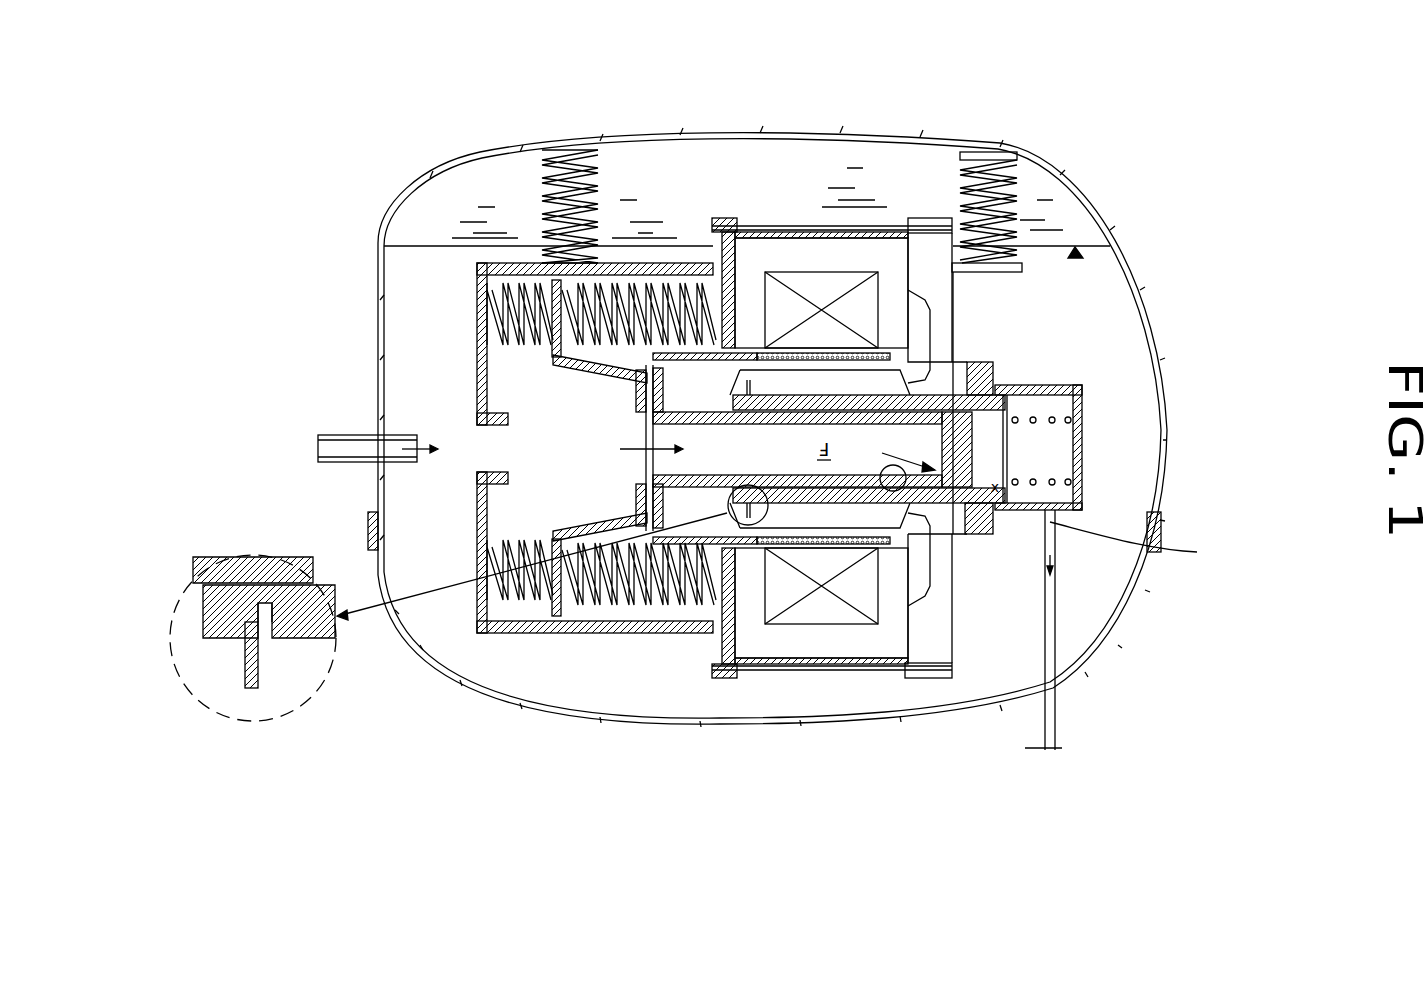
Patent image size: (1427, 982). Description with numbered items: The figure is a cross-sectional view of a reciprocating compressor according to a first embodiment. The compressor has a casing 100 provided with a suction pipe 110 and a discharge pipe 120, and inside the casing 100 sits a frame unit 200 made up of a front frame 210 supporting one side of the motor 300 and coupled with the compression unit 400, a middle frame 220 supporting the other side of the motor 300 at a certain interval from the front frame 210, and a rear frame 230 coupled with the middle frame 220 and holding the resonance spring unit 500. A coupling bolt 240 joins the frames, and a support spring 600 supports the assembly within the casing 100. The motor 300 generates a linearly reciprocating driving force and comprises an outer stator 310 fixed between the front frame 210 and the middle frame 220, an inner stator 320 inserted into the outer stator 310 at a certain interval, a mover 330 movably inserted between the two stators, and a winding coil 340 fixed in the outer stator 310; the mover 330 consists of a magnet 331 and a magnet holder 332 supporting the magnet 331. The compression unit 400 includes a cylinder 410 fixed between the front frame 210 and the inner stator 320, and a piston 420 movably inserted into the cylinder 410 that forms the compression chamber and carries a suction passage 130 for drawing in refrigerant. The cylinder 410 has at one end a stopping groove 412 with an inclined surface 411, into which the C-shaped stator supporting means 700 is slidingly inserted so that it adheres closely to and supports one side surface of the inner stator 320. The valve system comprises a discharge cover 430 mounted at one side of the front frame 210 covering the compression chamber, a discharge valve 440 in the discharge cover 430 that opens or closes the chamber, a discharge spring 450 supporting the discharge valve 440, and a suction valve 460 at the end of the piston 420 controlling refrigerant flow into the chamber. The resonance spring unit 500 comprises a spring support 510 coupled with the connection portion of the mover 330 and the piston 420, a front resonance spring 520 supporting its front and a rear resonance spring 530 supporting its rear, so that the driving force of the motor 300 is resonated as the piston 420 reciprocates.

The casing 100 is at (935, 716).
The suction pipe 110 is at (340, 457).
The discharge pipe 120 is at (1058, 727).
The suction passage 130 is at (895, 490).
The frame unit 200 is at (628, 86).
The front frame 210 is at (915, 212).
The middle frame 220 is at (728, 210).
The rear frame 230 is at (645, 250).
The coupling bolt 240 is at (935, 217).
The motor 300 is at (712, 766).
The outer stator 310 is at (890, 600).
The inner stator 320 is at (850, 505).
The mover 330 is at (750, 548).
The magnet 331 is at (660, 530).
The magnet holder 332 is at (641, 530).
The winding coil 340 is at (800, 590).
The compression unit 400 is at (1253, 347).
The cylinder 410 is at (1005, 388).
The inclined surface 411 is at (250, 640).
The stopping groove 412 is at (265, 640).
The piston 420 is at (1010, 392).
The discharge cover 430 is at (1093, 425).
The discharge valve 440 is at (1005, 455).
The discharge spring 450 is at (1005, 480).
The suction valve 460 is at (1010, 509).
The resonance spring unit 500 is at (565, 760).
The spring support 510 is at (533, 600).
The front resonance spring 520 is at (560, 617).
The rear resonance spring 530 is at (490, 633).
The support spring 600 is at (998, 165).
The stator supporting means 700 is at (245, 678).